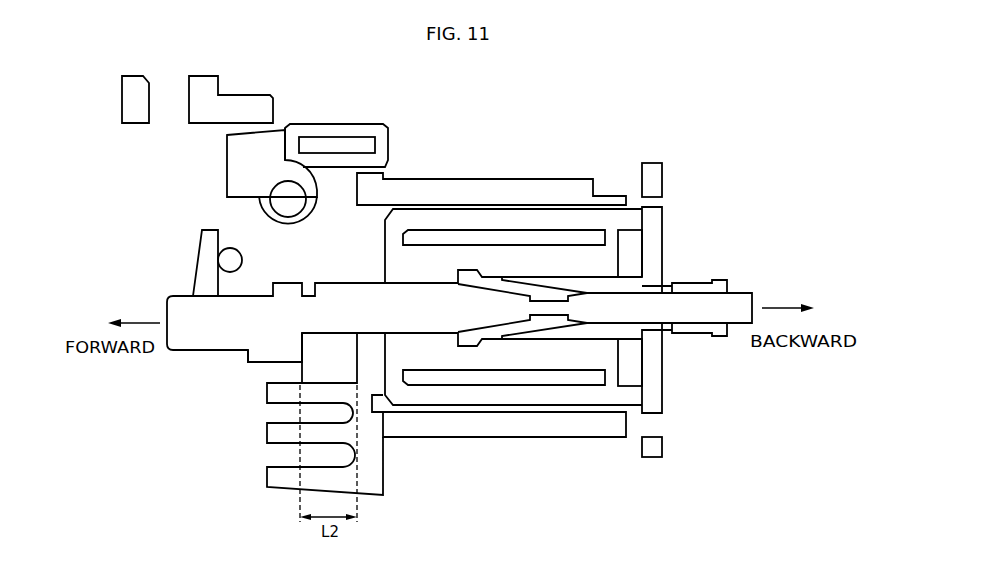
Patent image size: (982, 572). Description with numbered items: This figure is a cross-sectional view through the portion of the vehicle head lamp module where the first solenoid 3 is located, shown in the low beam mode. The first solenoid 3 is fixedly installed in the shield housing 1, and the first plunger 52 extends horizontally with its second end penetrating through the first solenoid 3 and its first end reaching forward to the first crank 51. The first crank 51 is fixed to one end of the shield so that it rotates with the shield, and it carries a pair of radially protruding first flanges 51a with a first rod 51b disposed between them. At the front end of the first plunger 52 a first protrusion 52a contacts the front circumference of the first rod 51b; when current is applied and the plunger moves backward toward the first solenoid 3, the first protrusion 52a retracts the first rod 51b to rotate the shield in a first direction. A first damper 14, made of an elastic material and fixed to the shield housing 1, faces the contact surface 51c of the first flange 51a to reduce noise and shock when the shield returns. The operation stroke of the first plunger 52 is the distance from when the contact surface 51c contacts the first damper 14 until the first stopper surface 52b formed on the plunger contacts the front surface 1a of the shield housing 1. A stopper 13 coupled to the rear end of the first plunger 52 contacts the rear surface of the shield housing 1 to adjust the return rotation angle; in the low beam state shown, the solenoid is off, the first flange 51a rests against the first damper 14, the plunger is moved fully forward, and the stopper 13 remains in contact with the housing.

The shield housing 1 is at (563, 430).
The front surface of the shield housing 1a is at (352, 368).
The first solenoid 3 is at (510, 222).
The stopper 13 is at (697, 282).
The first damper 14 is at (380, 132).
The first crank 51 is at (263, 215).
The first flange 51a is at (236, 178).
The first rod 51b is at (228, 263).
The contact surface 51c is at (288, 143).
The first plunger 52 is at (432, 320).
The first protrusion 52a is at (208, 239).
The first stopper surface 52b is at (303, 345).